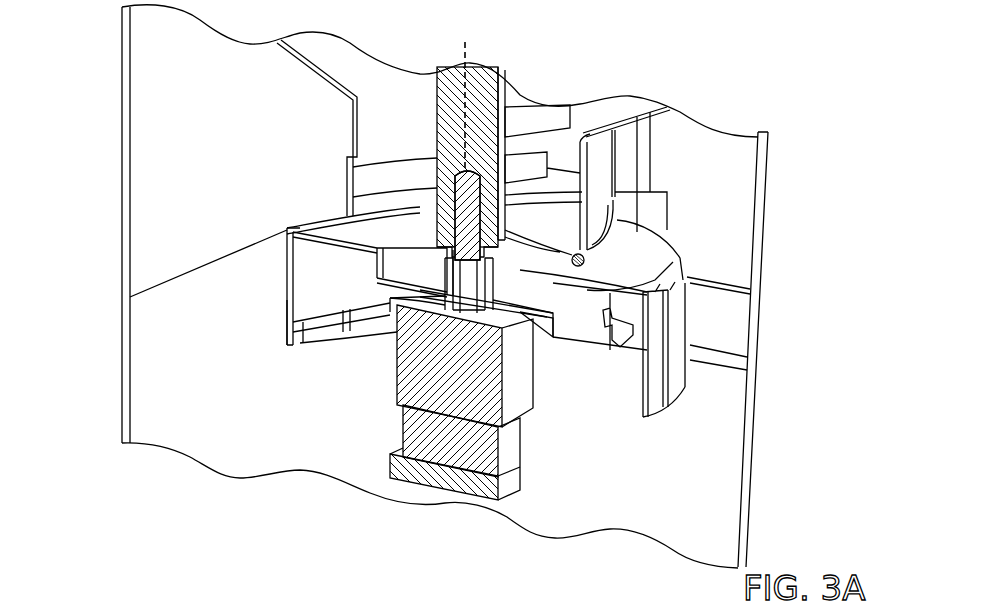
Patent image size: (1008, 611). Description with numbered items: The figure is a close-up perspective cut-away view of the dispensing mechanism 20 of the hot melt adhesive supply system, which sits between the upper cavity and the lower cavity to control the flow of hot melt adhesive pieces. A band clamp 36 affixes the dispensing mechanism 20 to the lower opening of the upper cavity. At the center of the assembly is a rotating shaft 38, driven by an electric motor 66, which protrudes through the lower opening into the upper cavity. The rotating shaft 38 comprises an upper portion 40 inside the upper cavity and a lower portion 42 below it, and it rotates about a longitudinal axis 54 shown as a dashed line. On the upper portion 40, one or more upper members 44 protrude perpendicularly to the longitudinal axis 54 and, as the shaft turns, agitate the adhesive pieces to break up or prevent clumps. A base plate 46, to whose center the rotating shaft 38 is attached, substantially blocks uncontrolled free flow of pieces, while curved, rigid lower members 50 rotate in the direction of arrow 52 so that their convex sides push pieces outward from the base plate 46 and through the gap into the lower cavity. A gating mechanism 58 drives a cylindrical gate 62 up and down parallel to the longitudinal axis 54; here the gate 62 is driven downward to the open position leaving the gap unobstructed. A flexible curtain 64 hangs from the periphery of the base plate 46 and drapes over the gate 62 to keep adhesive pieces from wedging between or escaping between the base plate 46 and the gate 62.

The dispensing mechanism 20 is at (236, 140).
The band clamp 36 is at (598, 228).
The rotating shaft 38 is at (453, 137).
The upper portion 40 is at (482, 103).
The lower portion 42 is at (447, 220).
The upper members 44 is at (542, 122).
The base plate 46 is at (407, 230).
The lower members 50 is at (550, 247).
The arrow 52 is at (623, 245).
The longitudinal axis 54 is at (466, 97).
The gating mechanism 58 is at (710, 318).
The gate 62 is at (318, 275).
The flexible curtain 64 is at (673, 377).
The electric motor 66 is at (425, 402).